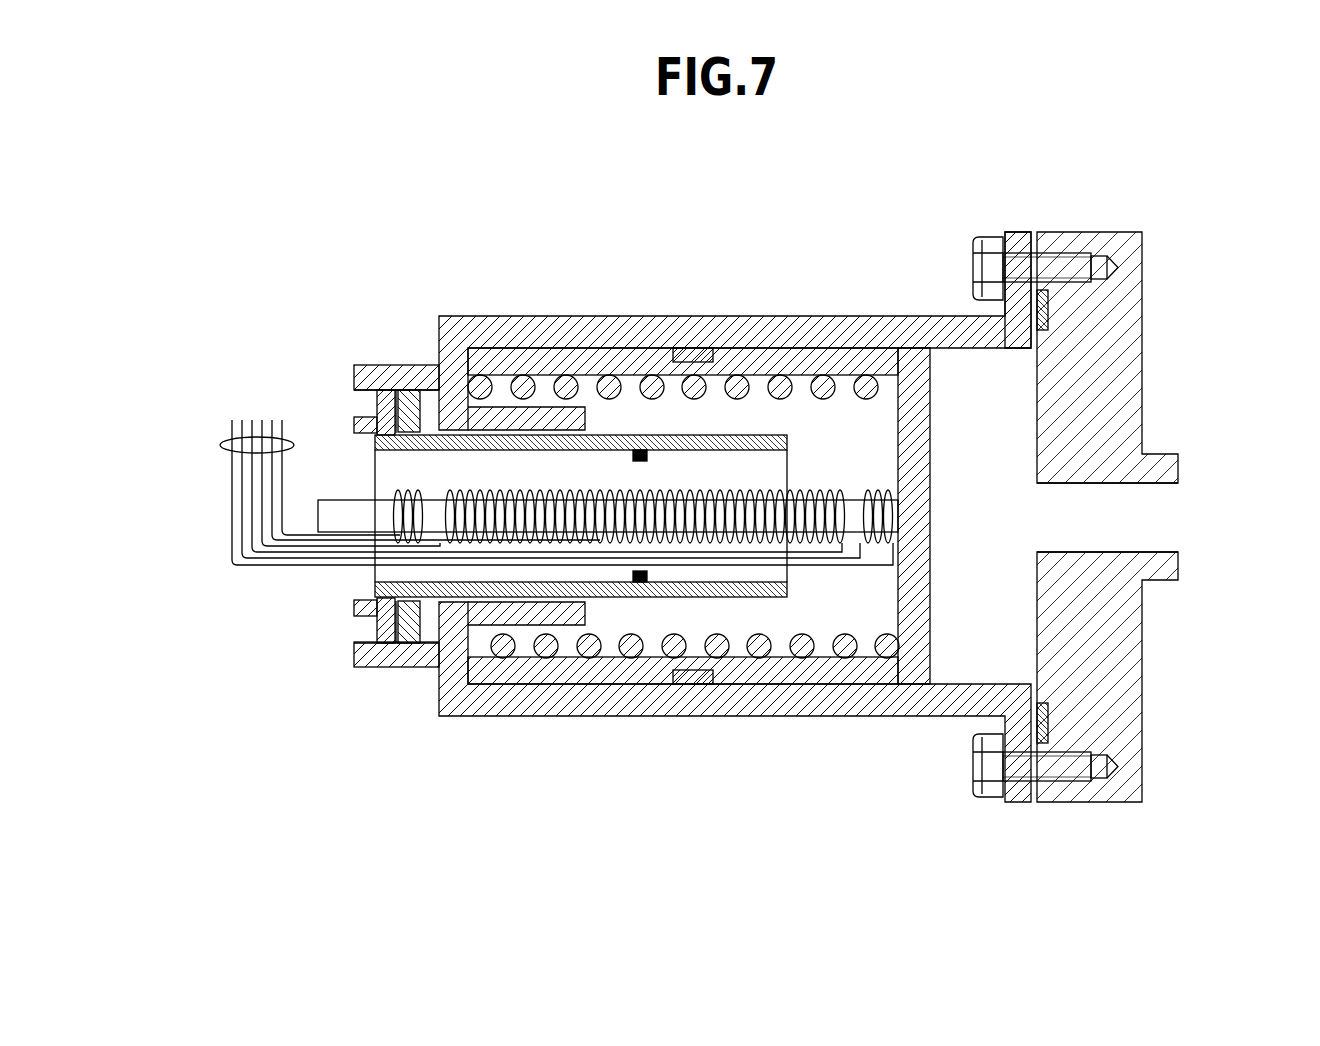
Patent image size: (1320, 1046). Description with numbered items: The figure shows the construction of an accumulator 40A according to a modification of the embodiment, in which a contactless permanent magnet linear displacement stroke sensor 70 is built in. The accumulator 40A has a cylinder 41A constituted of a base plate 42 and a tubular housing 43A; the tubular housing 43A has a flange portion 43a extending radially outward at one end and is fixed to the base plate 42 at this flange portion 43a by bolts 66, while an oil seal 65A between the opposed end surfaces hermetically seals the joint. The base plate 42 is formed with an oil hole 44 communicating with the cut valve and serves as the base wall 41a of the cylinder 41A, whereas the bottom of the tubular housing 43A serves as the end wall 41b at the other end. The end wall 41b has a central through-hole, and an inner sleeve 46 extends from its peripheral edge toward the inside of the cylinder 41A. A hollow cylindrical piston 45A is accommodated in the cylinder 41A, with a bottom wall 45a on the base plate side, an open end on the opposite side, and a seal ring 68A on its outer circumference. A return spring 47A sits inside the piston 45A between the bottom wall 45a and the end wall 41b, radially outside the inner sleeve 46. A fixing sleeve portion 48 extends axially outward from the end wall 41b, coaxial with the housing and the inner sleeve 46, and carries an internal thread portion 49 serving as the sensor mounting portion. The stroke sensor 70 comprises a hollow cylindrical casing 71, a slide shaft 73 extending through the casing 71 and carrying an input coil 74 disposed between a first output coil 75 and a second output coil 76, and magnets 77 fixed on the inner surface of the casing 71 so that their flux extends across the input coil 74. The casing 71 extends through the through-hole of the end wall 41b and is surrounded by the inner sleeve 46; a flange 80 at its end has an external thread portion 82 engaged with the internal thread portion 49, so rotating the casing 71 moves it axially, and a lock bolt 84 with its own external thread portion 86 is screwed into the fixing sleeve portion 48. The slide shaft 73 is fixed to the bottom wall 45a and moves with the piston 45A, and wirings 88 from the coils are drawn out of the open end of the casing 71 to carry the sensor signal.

The accumulator 40A is at (557, 285).
The end wall 41b is at (455, 362).
The cylinder 41A is at (773, 730).
The base wall 41a is at (1083, 618).
The base plate 42 is at (1143, 707).
The tubular housing 43A is at (690, 347).
The flange portion 43a is at (1015, 240).
The oil hole 44 is at (1107, 552).
The bottom wall 45a is at (920, 432).
The piston 45A is at (933, 587).
The inner sleeve 46 is at (505, 415).
The return spring 47A is at (600, 372).
The fixing sleeve portion 48 is at (368, 666).
The internal thread portion 49 is at (363, 637).
The oil seal 65A is at (1048, 310).
The bolts 66 is at (973, 265).
The seal ring 68A is at (705, 686).
The stroke sensor 70 is at (653, 614).
The casing 71 is at (717, 432).
The slide shaft 73 is at (333, 515).
The input coil 74 is at (503, 488).
The first output coil 75 is at (405, 497).
The second output coil 76 is at (875, 495).
The magnet 77 is at (636, 448).
The flange 80 is at (397, 640).
The external thread portion 82 is at (405, 645).
The lock bolt 84 is at (353, 600).
The external thread portion 86 is at (387, 648).
The wirings 88 is at (222, 444).